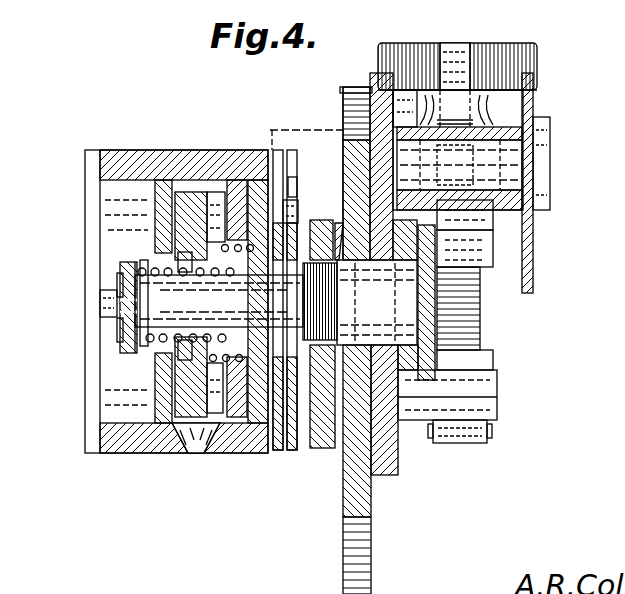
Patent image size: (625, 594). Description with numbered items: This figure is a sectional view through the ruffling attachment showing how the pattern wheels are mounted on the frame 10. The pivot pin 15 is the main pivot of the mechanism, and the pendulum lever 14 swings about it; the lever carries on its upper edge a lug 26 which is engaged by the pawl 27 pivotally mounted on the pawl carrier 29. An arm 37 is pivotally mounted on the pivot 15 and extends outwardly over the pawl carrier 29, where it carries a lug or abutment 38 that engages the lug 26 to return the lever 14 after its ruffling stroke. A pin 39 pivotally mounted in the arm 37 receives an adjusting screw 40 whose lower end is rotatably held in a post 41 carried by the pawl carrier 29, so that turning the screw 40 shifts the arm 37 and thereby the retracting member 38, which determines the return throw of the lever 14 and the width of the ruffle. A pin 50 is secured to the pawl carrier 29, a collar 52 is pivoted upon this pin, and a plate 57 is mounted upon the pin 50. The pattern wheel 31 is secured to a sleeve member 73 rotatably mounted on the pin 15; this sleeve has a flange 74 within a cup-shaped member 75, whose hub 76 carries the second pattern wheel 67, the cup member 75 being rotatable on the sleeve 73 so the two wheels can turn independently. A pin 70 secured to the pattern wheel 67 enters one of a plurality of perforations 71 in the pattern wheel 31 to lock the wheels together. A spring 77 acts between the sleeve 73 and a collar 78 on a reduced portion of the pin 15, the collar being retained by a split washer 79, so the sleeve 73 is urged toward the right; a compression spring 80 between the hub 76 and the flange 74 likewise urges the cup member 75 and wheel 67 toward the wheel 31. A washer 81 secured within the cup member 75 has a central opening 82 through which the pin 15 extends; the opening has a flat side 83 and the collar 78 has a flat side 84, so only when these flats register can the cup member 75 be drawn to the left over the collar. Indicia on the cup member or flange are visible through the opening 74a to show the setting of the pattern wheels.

The frame 10 is at (322, 442).
The pendulum lever 14 is at (352, 508).
The pivot pin 15 is at (410, 305).
The lug 26 is at (343, 180).
The pawl 27 is at (286, 128).
The pawl carrier 29 is at (388, 458).
The pattern wheel 31 is at (291, 452).
The arm 37 is at (398, 233).
The lug or abutment 38 is at (357, 148).
The pin 39 is at (488, 225).
The adjusting screw 40 is at (510, 63).
The post 41 is at (480, 380).
The pin 50 is at (512, 157).
The collar 52 is at (503, 130).
The plate 57 is at (533, 267).
The pattern wheel 67 is at (272, 448).
The pin 70 is at (299, 208).
The perforations 71 is at (293, 190).
The sleeve member 73 is at (275, 268).
The flange 74 is at (186, 200).
The opening 74a is at (196, 440).
The cup-shaped member 75 is at (152, 165).
The hub 76 is at (297, 333).
The spring 77 is at (202, 277).
The collar 78 is at (127, 343).
The split washer 79 is at (120, 328).
The compression spring 80 is at (236, 277).
The washer 81 is at (140, 236).
The central opening 82 is at (160, 350).
The flat side 83 is at (140, 257).
The flat side 84 is at (140, 258).